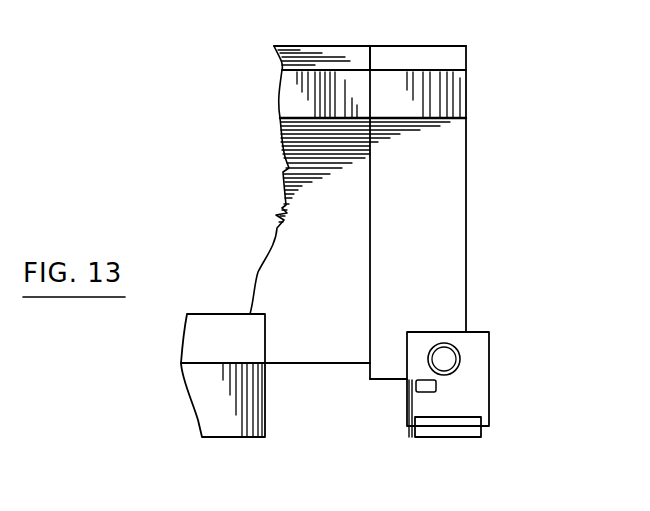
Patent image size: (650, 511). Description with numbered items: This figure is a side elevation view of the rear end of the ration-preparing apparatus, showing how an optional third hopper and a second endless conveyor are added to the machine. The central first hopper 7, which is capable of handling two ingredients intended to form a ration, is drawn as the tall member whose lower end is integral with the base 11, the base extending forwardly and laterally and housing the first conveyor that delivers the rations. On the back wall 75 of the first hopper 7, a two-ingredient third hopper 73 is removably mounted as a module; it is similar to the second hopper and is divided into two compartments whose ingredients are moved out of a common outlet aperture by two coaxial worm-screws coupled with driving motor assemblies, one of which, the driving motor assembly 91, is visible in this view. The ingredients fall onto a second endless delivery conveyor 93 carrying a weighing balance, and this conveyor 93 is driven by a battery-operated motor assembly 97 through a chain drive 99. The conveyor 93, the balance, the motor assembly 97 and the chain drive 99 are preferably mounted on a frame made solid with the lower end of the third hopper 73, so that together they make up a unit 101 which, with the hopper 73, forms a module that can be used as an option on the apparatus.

The first hopper 7 is at (287, 193).
The base 11 is at (221, 430).
The third hopper 73 is at (467, 193).
The back wall 75 is at (371, 58).
The driving motor assembly 91 is at (458, 348).
The second endless delivery conveyor 93 is at (458, 437).
The motor assembly 97 is at (437, 388).
The chain drive 99 is at (410, 405).
The unit 101 is at (490, 381).